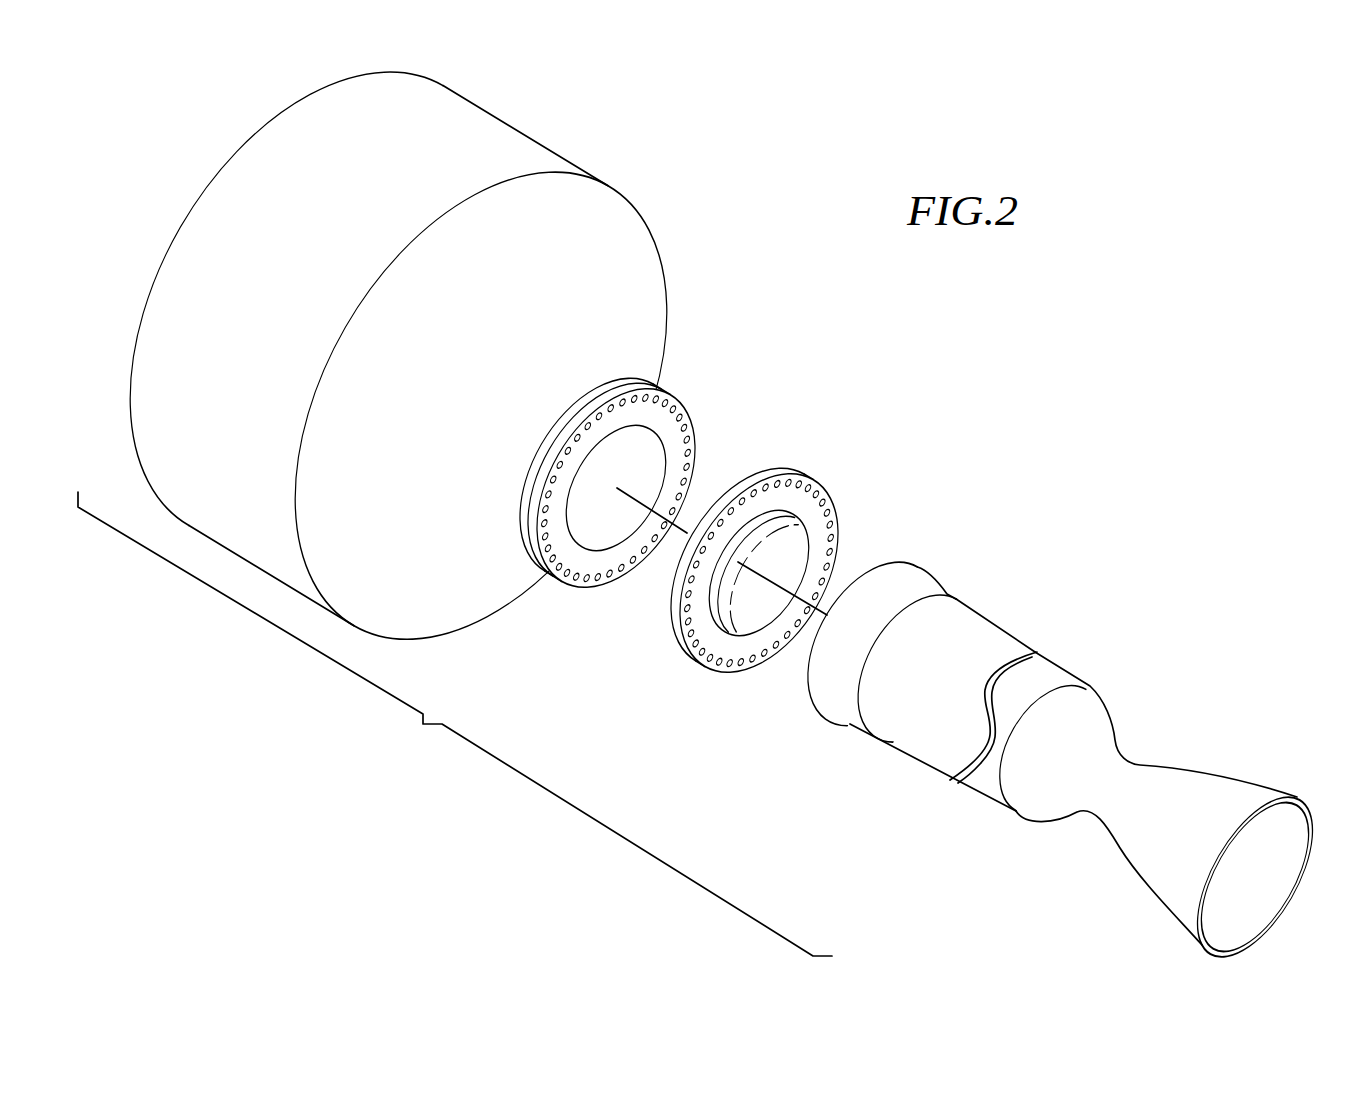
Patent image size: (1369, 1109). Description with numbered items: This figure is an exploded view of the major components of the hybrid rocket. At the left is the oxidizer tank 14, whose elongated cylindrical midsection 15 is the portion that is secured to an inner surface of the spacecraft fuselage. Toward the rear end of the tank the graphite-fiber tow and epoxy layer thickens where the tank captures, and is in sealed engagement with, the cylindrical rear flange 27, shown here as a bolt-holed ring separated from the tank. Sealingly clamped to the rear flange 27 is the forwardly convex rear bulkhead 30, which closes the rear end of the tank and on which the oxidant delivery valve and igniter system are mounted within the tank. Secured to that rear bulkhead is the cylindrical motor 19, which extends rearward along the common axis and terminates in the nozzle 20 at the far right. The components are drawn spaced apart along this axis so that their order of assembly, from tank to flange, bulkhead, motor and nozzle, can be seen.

The oxidizer tank 14 is at (660, 240).
The elongated cylindrical midsection 15 is at (560, 153).
The cylindrical motor 19 is at (1035, 677).
The nozzle 20 is at (1160, 878).
The rear flange 27 is at (660, 418).
The rear bulkhead 30 is at (710, 642).